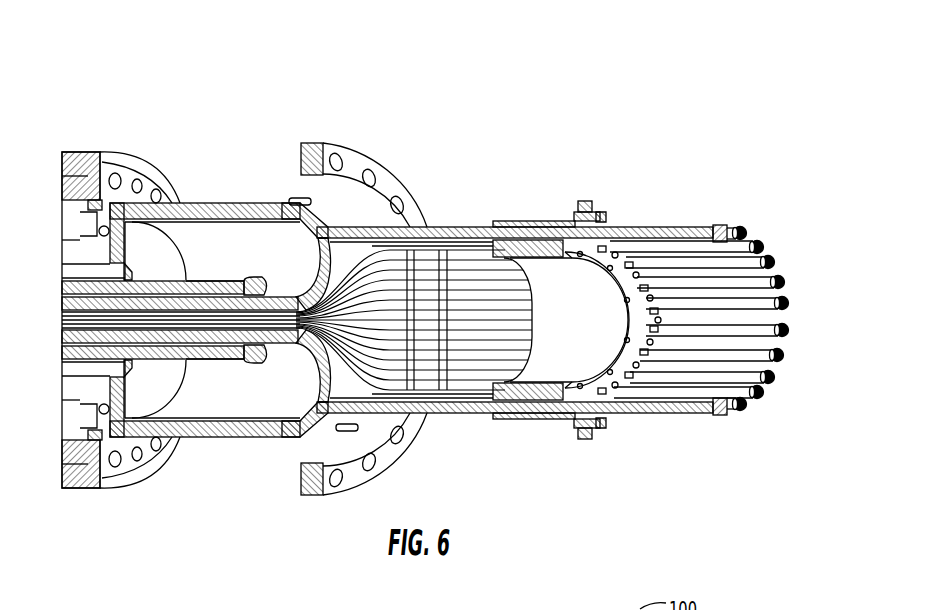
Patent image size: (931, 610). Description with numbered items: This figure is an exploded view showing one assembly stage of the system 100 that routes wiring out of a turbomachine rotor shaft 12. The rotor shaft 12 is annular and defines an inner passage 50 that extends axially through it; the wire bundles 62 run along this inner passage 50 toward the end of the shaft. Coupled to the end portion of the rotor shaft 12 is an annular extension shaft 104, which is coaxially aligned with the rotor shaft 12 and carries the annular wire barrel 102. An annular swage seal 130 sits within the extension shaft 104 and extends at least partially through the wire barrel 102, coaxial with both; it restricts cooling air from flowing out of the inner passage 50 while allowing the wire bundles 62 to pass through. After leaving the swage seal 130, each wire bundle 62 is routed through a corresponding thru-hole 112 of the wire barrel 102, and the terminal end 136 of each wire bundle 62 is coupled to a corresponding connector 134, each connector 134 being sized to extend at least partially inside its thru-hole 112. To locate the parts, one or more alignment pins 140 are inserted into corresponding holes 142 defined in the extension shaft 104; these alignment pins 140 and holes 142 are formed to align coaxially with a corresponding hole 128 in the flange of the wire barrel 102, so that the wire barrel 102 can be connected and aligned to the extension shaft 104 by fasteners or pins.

The rotor shaft 12 is at (76, 152).
The inner passage 50 is at (62, 320).
The wire bundle 62 is at (188, 300).
The system 100 is at (452, 153).
The wire barrel 102 is at (536, 221).
The extension shaft 104 is at (230, 432).
The thru-hole 112 is at (598, 212).
The hole 128 is at (590, 200).
The swage seal 130 is at (222, 278).
The connector 134 is at (735, 230).
The terminal end 136 is at (712, 226).
The alignment pin 140 is at (300, 207).
The hole 142 is at (289, 198).